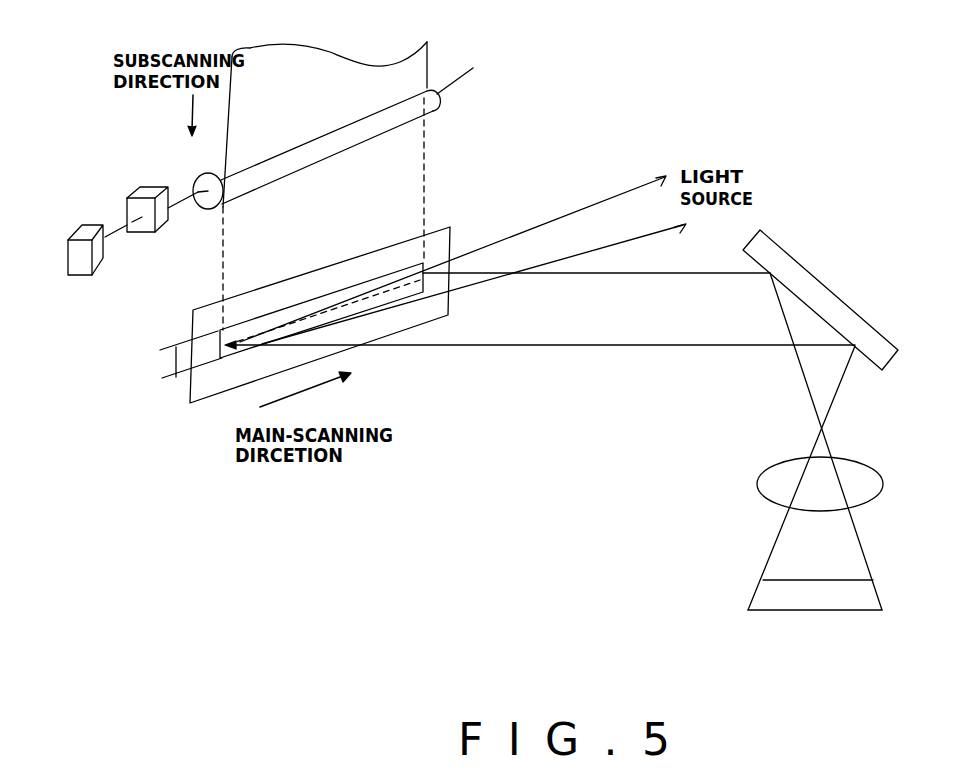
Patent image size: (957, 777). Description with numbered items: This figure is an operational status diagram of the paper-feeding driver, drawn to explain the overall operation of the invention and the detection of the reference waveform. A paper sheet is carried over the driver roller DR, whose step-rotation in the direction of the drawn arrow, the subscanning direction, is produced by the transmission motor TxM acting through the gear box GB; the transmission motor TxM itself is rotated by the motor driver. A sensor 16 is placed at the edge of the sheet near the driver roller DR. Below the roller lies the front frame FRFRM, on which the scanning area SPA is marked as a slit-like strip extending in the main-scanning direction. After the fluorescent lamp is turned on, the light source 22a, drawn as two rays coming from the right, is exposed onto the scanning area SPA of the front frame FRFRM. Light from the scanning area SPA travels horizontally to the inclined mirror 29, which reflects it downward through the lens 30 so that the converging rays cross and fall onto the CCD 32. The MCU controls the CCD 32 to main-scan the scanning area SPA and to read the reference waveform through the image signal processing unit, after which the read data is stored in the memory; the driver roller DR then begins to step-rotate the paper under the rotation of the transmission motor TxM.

The sensor 16 is at (431, 71).
The light source 22a is at (578, 212).
The mirror 29 is at (842, 293).
The lens 30 is at (883, 483).
The CCD 32 is at (879, 590).
The driver roller DR is at (441, 100).
The gear box GB is at (148, 184).
The transmission motor TxM is at (104, 249).
The front frame FRFRM is at (452, 232).
The scanning area SPA is at (169, 364).